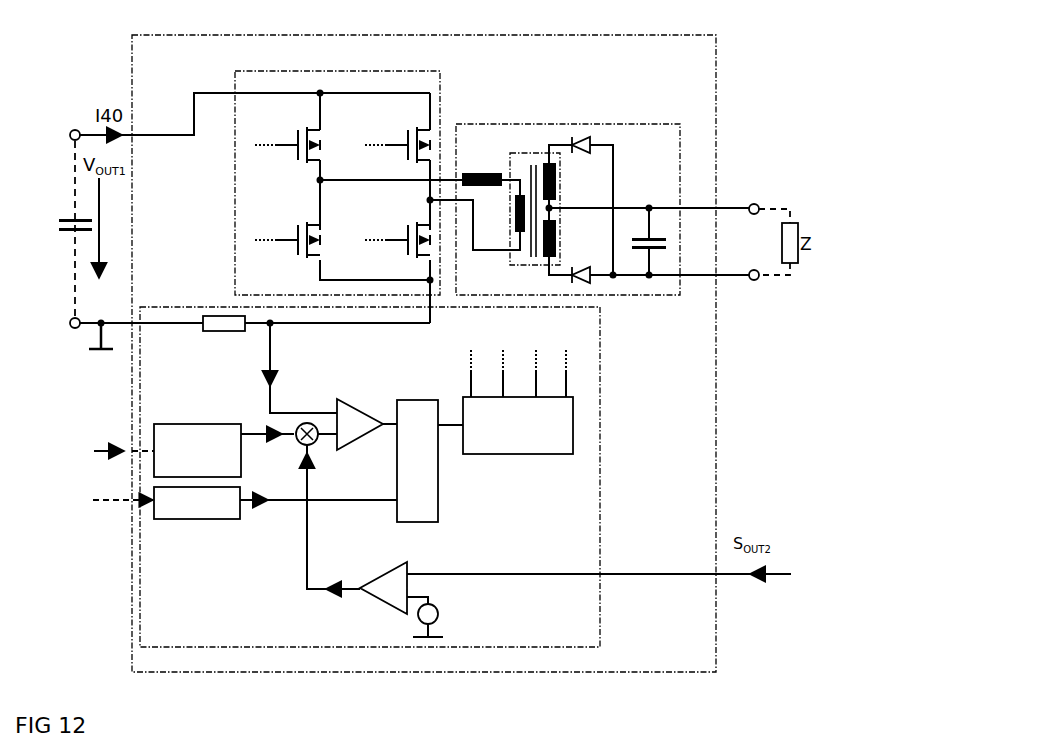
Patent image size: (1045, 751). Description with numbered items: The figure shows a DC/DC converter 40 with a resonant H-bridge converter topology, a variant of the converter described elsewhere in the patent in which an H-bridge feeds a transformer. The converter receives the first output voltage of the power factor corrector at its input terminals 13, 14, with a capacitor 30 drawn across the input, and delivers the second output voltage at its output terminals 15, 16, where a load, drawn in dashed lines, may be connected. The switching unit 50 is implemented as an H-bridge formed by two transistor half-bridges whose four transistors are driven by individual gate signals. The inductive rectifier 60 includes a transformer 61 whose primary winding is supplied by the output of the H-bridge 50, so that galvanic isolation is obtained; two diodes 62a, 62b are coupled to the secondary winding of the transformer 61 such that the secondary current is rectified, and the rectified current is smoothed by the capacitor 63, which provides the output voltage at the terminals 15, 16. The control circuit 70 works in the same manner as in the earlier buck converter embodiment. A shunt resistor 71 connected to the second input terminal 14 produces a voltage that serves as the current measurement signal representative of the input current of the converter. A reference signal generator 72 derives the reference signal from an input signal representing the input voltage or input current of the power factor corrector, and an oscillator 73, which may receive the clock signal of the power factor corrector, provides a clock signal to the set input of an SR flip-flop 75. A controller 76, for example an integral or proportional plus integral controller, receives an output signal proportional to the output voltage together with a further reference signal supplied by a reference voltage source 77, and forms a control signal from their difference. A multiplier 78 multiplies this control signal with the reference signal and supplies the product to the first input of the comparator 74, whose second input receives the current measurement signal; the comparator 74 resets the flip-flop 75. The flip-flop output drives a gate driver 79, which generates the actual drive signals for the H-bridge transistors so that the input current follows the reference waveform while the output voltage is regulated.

The output terminal 13 is at (75, 129).
The second input terminal 14 is at (74, 333).
The output terminal 15 is at (755, 281).
The output terminal 16 is at (756, 204).
The capacitor 30 is at (62, 221).
The DC/DC converter 40 is at (424, 340).
The switching unit 50 is at (377, 185).
The inductive rectifier 60 is at (605, 197).
The transformer 61 is at (535, 200).
The diode 62a is at (589, 155).
The diode 62b is at (590, 264).
The capacitor 63 is at (652, 241).
The control circuit 70 is at (604, 434).
The shunt resistor 71 is at (245, 341).
The reference signal generator 72 is at (176, 424).
The oscillator 73 is at (188, 520).
The comparator 74 is at (350, 399).
The SR flip-flop 75 is at (415, 400).
The controller 76 is at (386, 569).
The reference voltage source 77 is at (416, 623).
The multiplier 78 is at (318, 445).
The gate driver 79 is at (552, 455).